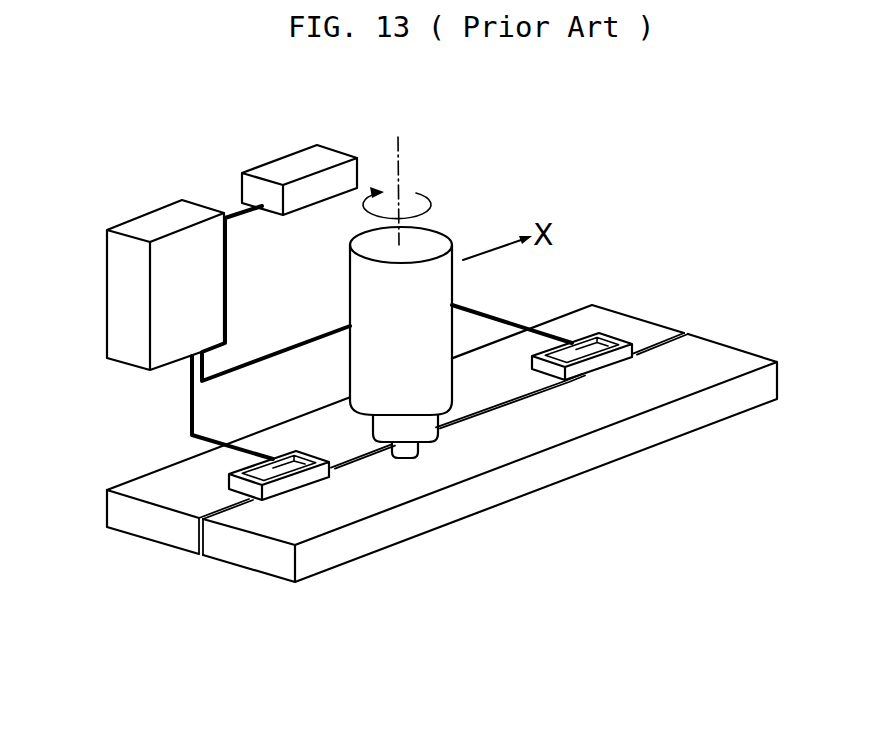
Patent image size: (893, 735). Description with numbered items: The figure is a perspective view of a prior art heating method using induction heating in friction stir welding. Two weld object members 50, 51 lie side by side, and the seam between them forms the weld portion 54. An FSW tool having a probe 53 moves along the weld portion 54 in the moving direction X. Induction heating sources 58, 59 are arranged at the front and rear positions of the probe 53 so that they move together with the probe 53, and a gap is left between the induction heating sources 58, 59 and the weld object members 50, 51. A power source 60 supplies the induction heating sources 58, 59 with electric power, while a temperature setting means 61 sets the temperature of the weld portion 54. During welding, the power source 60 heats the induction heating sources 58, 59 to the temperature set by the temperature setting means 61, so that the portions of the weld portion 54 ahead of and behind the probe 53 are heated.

The weld object member 50 is at (137, 518).
The weld object member 51 is at (268, 558).
The probe 53 is at (408, 452).
The weld portion 54 is at (193, 537).
The induction heating source 58 is at (600, 363).
The induction heating source 59 is at (298, 480).
The power source 60 is at (158, 222).
The temperature setting means 61 is at (300, 165).